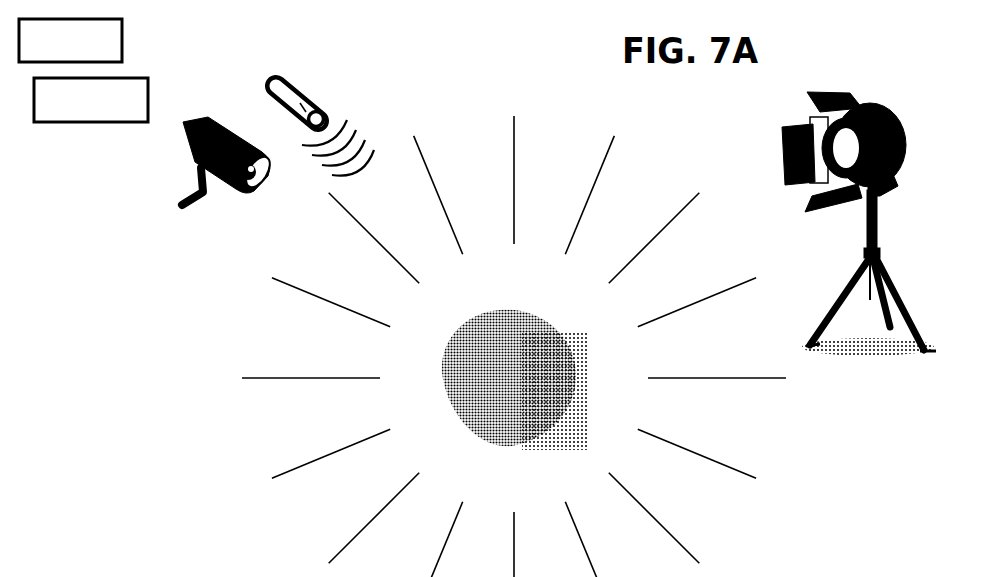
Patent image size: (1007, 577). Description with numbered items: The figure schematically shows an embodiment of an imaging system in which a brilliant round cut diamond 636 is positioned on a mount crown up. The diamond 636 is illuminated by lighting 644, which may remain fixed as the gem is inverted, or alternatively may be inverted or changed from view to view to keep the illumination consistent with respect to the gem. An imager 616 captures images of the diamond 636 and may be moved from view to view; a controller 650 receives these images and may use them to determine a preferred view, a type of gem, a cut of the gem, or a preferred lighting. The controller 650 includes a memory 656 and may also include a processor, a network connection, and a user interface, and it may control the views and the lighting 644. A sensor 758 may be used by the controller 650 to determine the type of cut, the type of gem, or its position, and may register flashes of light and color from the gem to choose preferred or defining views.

The memory 656 is at (122, 40).
The controller 650 is at (148, 100).
The imager 616 is at (182, 138).
The sensor 758 is at (298, 108).
The brilliant round cut diamond 636 is at (522, 330).
The lighting 644 is at (875, 106).